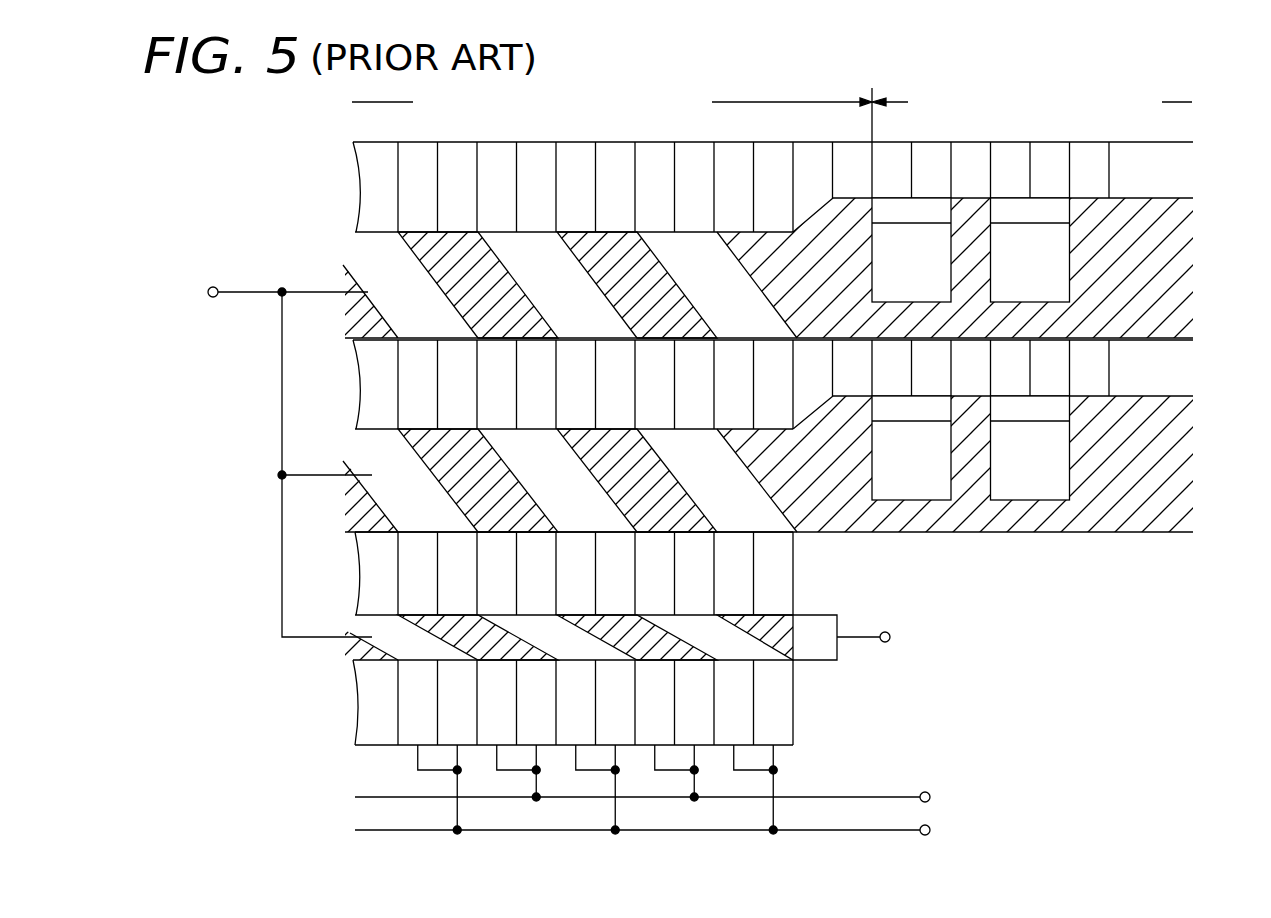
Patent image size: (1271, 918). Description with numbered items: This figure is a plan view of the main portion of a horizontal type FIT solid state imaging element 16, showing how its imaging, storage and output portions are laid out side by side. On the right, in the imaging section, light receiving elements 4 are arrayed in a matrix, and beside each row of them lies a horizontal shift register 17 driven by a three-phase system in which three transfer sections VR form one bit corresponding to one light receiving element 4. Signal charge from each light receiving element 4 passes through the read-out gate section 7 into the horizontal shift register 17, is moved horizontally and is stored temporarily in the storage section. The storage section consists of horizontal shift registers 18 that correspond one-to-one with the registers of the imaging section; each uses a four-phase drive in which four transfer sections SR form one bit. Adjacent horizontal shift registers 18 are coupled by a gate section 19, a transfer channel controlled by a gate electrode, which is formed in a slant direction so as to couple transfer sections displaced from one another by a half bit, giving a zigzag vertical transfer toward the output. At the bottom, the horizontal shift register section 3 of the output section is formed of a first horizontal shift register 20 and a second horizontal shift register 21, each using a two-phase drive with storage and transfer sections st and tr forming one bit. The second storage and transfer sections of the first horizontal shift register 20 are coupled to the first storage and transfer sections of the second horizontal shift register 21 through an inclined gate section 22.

The horizontal shift register section 3 is at (245, 663).
The light receiving element 4 is at (1053, 270).
The read-out gate section 7 is at (1053, 208).
The horizontal type FIT solid state imaging element 16 is at (153, 234).
The horizontal shift register 17 is at (1157, 157).
The horizontal shift register 18 is at (368, 182).
The gate section 19 is at (380, 270).
The first horizontal shift register 20 is at (372, 590).
The second horizontal shift register 21 is at (372, 703).
The gate section 22 is at (743, 650).